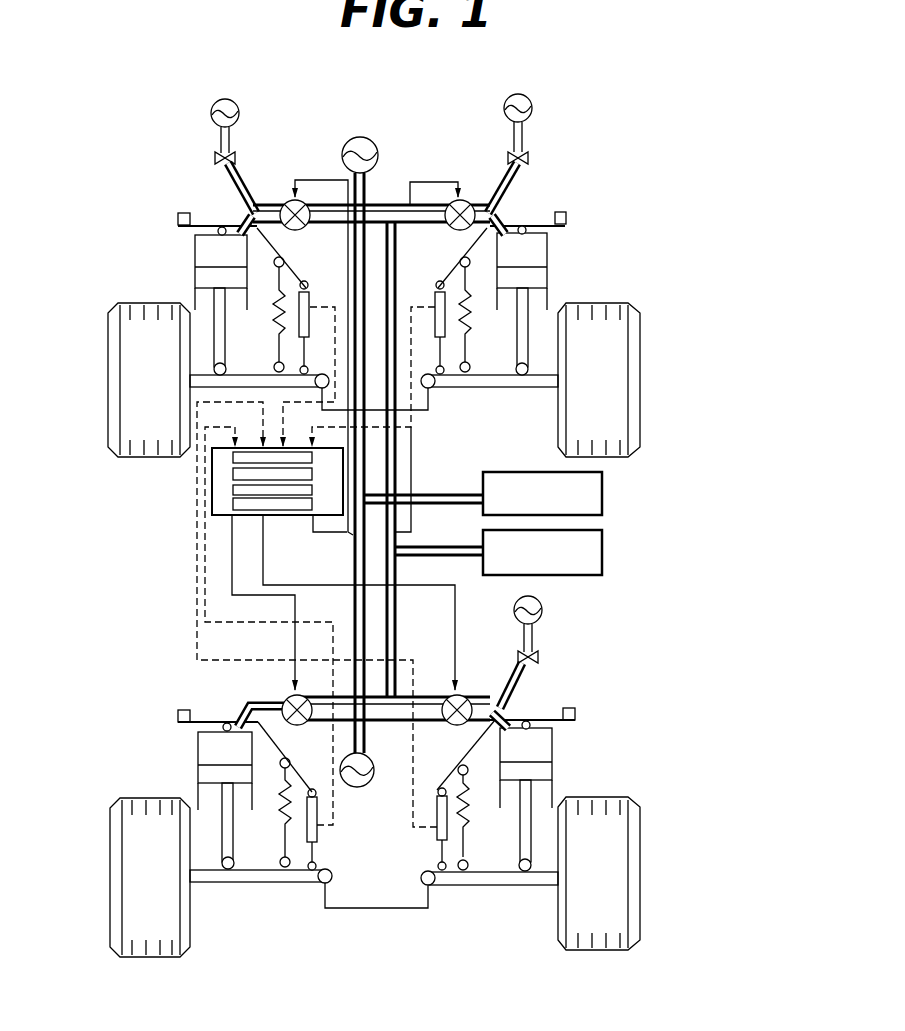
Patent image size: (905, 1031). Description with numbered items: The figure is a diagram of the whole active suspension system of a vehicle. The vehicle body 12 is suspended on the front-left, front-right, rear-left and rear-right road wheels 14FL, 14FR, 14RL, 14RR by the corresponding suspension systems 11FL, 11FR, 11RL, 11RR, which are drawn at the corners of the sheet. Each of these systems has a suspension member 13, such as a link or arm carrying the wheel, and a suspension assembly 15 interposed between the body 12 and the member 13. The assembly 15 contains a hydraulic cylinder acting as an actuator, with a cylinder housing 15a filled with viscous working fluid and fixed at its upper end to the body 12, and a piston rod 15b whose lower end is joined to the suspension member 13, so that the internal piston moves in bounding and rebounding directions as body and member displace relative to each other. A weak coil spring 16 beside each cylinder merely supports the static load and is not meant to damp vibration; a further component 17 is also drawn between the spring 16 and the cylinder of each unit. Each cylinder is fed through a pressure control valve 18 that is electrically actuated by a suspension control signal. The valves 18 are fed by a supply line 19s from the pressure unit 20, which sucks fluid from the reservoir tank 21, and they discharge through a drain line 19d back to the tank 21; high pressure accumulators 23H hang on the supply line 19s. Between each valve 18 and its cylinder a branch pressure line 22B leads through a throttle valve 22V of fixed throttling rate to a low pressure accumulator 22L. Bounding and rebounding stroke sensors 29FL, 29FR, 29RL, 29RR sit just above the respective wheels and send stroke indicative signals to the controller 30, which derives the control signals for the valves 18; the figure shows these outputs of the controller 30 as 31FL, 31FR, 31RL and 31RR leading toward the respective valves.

The rear-right suspension system 11RR is at (178, 243).
The rear-left suspension system 11RL is at (655, 223).
The front-right suspension system 11FR is at (178, 748).
The front-left suspension system 11FL is at (645, 729).
The vehicle body 12 is at (413, 412).
The suspension member 13 is at (242, 384).
The rear-right road wheel 14RR is at (118, 327).
The rear-left road wheel 14RL is at (590, 298).
The front-right road wheel 14FR is at (120, 870).
The front-left road wheel 14FL is at (583, 950).
The suspension assembly 15 is at (195, 297).
The cylinder housing 15a is at (206, 223).
The piston rod 15b is at (526, 373).
The coil spring 16 is at (276, 310).
The vehicle height sensor 17 is at (306, 284).
The pressure control valve 18 is at (282, 198).
The supply line 19s is at (355, 592).
The drain line 19d is at (394, 610).
The pressure unit 20 is at (513, 472).
The reservoir tank 21 is at (483, 536).
The low pressure accumulator 22L is at (238, 103).
The throttle valve 22V is at (218, 155).
The branch pressure line 22B is at (223, 172).
The high pressure accumulator 23H is at (354, 138).
The rear-right bounding and rebounding stroke sensor 29RR is at (178, 216).
The rear-left bounding and rebounding stroke sensor 29RL is at (567, 216).
The front-right bounding and rebounding stroke sensor 29FR is at (180, 712).
The front-left bounding and rebounding stroke sensor 29FL is at (575, 710).
The controller 30 is at (236, 505).
The front left control output 31FL is at (234, 457).
The front right control output 31FR is at (236, 474).
The rear left control output 31RL is at (236, 491).
The rear right control output 31RR is at (293, 513).